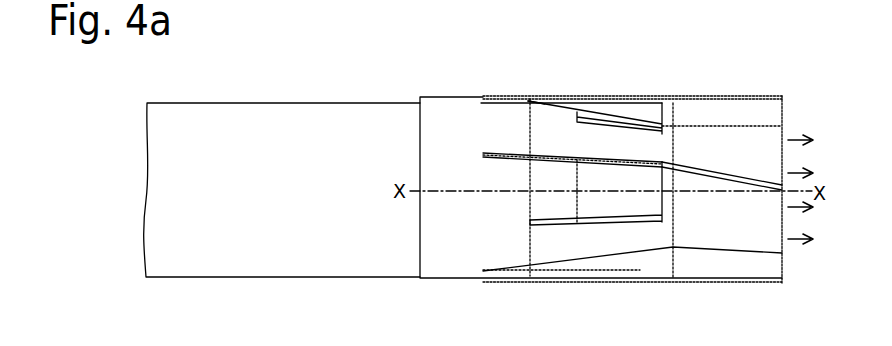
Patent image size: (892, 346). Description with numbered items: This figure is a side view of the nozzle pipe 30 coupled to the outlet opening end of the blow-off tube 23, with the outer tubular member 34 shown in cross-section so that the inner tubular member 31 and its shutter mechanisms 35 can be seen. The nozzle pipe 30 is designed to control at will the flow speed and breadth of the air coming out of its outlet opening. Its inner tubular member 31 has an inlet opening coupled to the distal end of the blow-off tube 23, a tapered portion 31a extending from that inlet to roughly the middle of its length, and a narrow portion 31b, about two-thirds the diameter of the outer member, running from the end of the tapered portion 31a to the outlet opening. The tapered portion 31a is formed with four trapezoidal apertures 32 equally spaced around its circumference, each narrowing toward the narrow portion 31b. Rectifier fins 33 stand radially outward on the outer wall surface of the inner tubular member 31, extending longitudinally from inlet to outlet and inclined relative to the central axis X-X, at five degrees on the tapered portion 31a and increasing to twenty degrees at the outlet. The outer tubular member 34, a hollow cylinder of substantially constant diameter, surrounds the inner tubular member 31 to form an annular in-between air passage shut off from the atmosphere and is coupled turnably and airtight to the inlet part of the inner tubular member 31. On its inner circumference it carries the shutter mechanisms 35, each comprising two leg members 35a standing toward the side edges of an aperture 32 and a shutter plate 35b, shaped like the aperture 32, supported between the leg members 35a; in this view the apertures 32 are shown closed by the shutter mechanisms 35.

The blow-off tube 23 is at (237, 118).
The nozzle pipe 30 is at (663, 82).
The inner tubular member 31 is at (483, 118).
The tapered portion 31a is at (545, 135).
The narrow portion 31b is at (736, 130).
The apertures 32 is at (593, 155).
The rectifier fins 33 is at (697, 98).
The outer tubular member 34 is at (561, 96).
The shutter mechanisms 35 is at (595, 176).
The leg members 35a is at (533, 222).
The shutter plate 35b is at (615, 108).